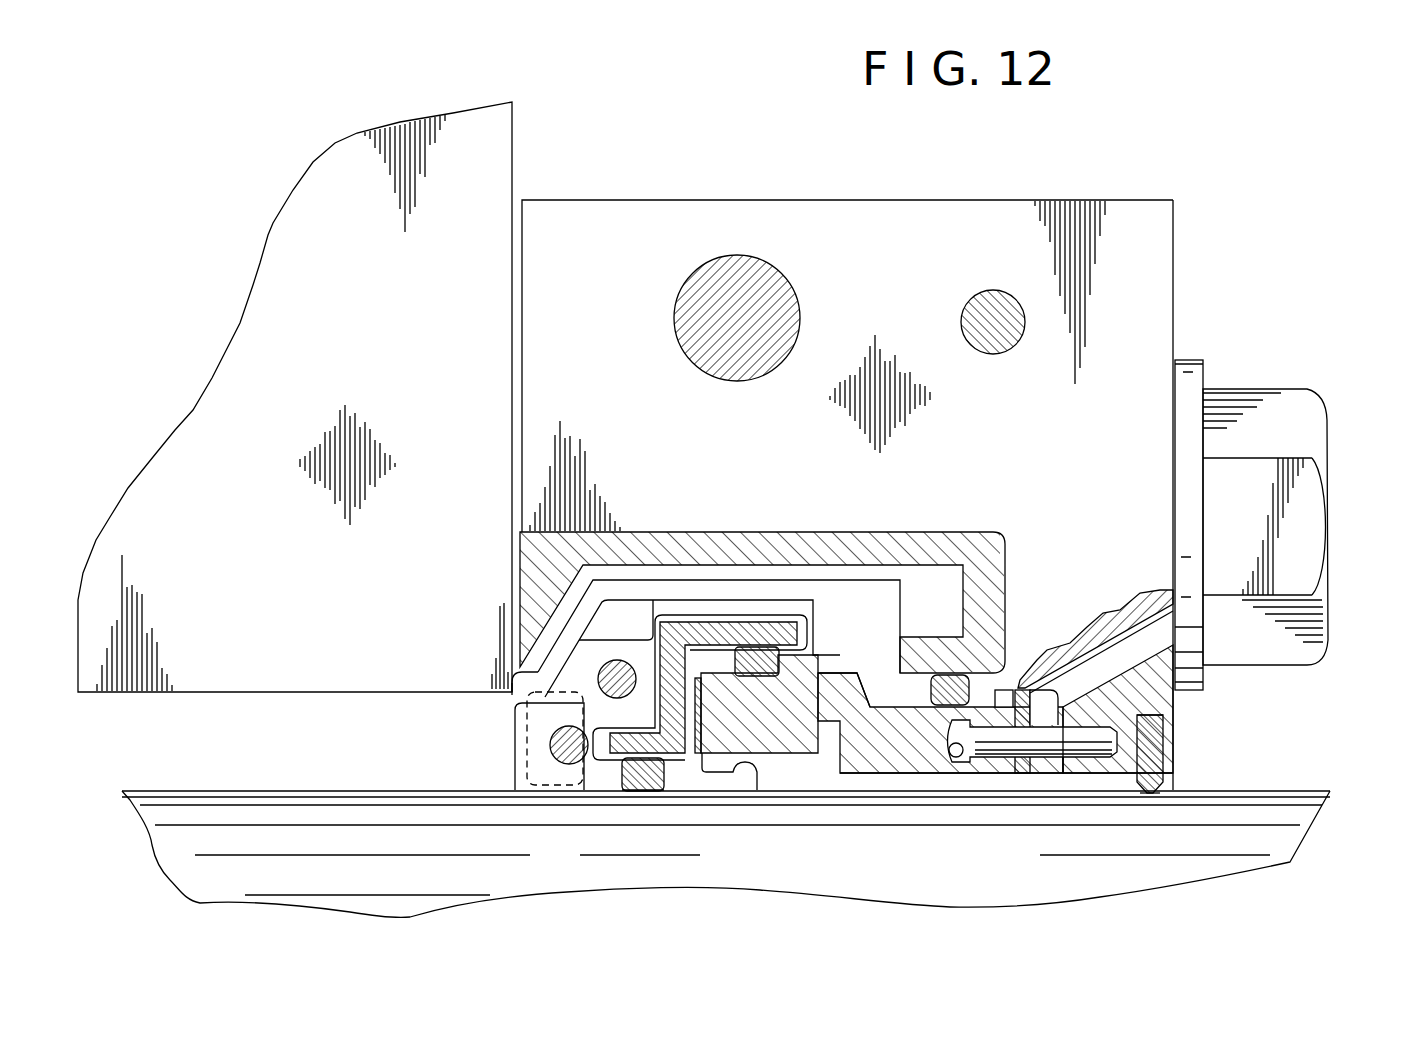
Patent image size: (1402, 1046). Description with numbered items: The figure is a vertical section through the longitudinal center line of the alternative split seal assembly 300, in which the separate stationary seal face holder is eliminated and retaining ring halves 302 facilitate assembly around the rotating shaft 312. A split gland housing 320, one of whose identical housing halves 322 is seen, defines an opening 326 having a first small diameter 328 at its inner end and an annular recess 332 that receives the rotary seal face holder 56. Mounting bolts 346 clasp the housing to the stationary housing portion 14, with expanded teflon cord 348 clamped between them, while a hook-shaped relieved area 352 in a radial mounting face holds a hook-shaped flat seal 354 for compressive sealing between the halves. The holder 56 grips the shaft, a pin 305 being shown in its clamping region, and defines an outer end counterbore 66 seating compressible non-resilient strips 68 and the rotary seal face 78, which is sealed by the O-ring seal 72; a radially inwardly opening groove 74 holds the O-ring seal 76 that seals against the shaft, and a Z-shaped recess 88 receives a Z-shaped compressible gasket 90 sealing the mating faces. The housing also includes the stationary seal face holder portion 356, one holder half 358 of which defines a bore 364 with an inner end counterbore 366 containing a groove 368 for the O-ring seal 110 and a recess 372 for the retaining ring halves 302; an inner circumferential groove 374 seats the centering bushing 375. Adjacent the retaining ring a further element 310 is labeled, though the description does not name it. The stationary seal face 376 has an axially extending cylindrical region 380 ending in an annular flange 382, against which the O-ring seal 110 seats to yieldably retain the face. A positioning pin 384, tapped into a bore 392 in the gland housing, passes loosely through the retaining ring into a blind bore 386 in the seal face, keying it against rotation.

The stationary housing portion 14 is at (323, 180).
The split seal assembly 300 is at (1122, 158).
The split gland housing 320 is at (1150, 205).
The housing half 322 is at (1168, 248).
The holder half 358 is at (1185, 682).
The mounting bolt 346 is at (1272, 400).
The hook-shaped relieved area 352 is at (862, 532).
The expanded teflon cord 348 is at (518, 560).
The hook-shaped flat seal 354 is at (965, 543).
The circumferential inwardly opening groove 368 is at (933, 667).
The stationary seal face holder portion 356 is at (1107, 525).
The annular recess 332 is at (738, 582).
The first small diameter 328 is at (527, 677).
The opening 326 is at (513, 693).
The pin 305 is at (515, 727).
The first seal face holder 56 is at (515, 763).
The Z-shaped recess 88 is at (659, 617).
The Z-shaped compressible gasket 90 is at (689, 627).
The compressible non-resilient strip 68 is at (697, 760).
The O-ring seal 72 is at (776, 647).
The rotary seal face 78 is at (788, 747).
The outer end counterbore 66 is at (760, 792).
The radially inwardly opening circumferential groove 74 is at (628, 793).
The O-ring seal 76 is at (642, 792).
The axially extending cylindrical region 380 is at (880, 707).
The stationary seal face 376 is at (828, 680).
The blind bore 386 is at (940, 773).
The O-ring seal 110 is at (968, 680).
The spacer 310 is at (1020, 690).
The retaining ring half 302 is at (1040, 727).
The positioning pin 384 is at (983, 757).
The circumferentially inwardly opening recess 372 is at (1085, 660).
The inner circumferential groove 374 is at (1167, 755).
The annular flange 382 is at (1050, 775).
The inner end counterbore 366 is at (1090, 775).
The centering bushing 375 is at (1167, 783).
The bore 392 is at (1167, 725).
The bore 364 is at (1163, 793).
The rotating shaft 312 is at (207, 813).